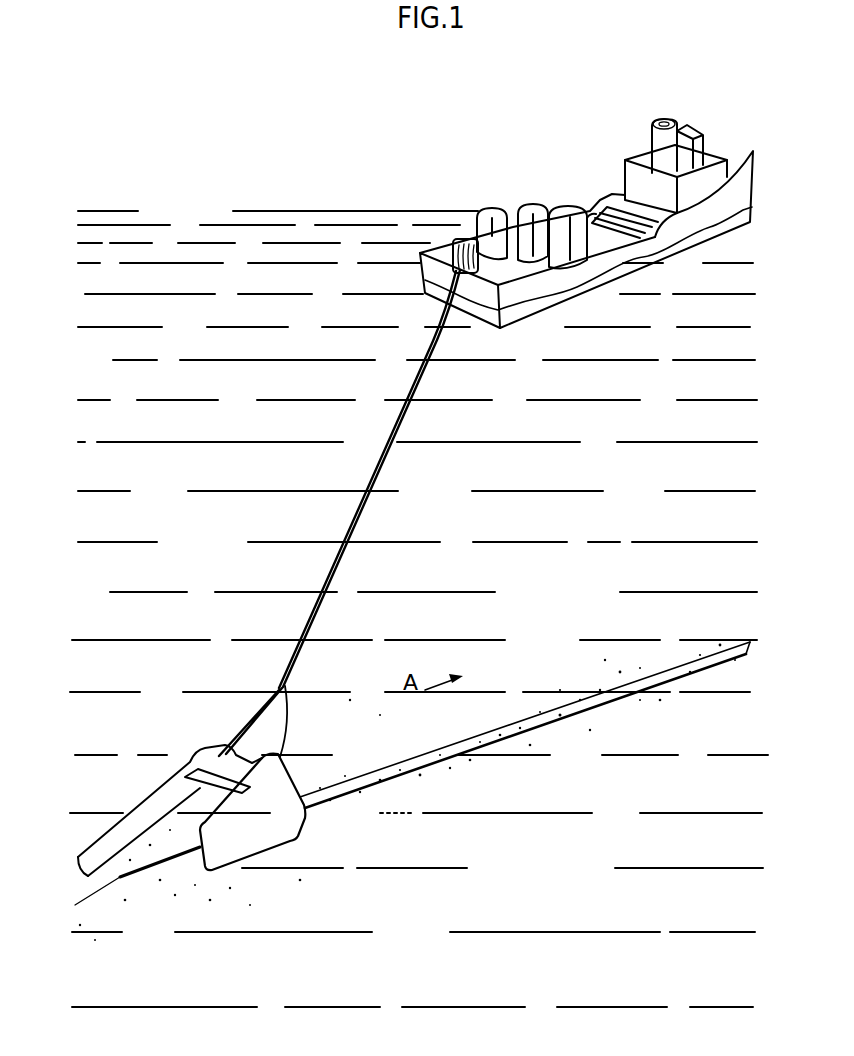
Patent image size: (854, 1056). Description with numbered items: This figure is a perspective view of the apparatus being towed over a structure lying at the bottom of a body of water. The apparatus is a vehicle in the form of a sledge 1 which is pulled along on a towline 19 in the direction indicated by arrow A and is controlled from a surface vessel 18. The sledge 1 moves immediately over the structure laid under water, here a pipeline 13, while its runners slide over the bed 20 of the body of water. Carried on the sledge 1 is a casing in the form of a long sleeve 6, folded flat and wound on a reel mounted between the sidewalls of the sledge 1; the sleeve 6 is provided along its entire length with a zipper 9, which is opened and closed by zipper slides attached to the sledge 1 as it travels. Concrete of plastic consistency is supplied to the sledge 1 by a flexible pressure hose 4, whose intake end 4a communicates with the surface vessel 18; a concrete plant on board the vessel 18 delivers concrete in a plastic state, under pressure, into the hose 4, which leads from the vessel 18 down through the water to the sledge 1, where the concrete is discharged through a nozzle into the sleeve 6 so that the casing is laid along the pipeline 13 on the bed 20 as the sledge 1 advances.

The sledge 1 is at (257, 838).
The flexible pressure hose 4 is at (373, 478).
The intake end 4a is at (461, 263).
The long sleeve 6 is at (135, 815).
The zipper 9 is at (87, 870).
The pipeline 13 is at (662, 668).
The surface vessel 18 is at (610, 287).
The towline 19 is at (289, 711).
The bed of the body of water 20 is at (466, 804).